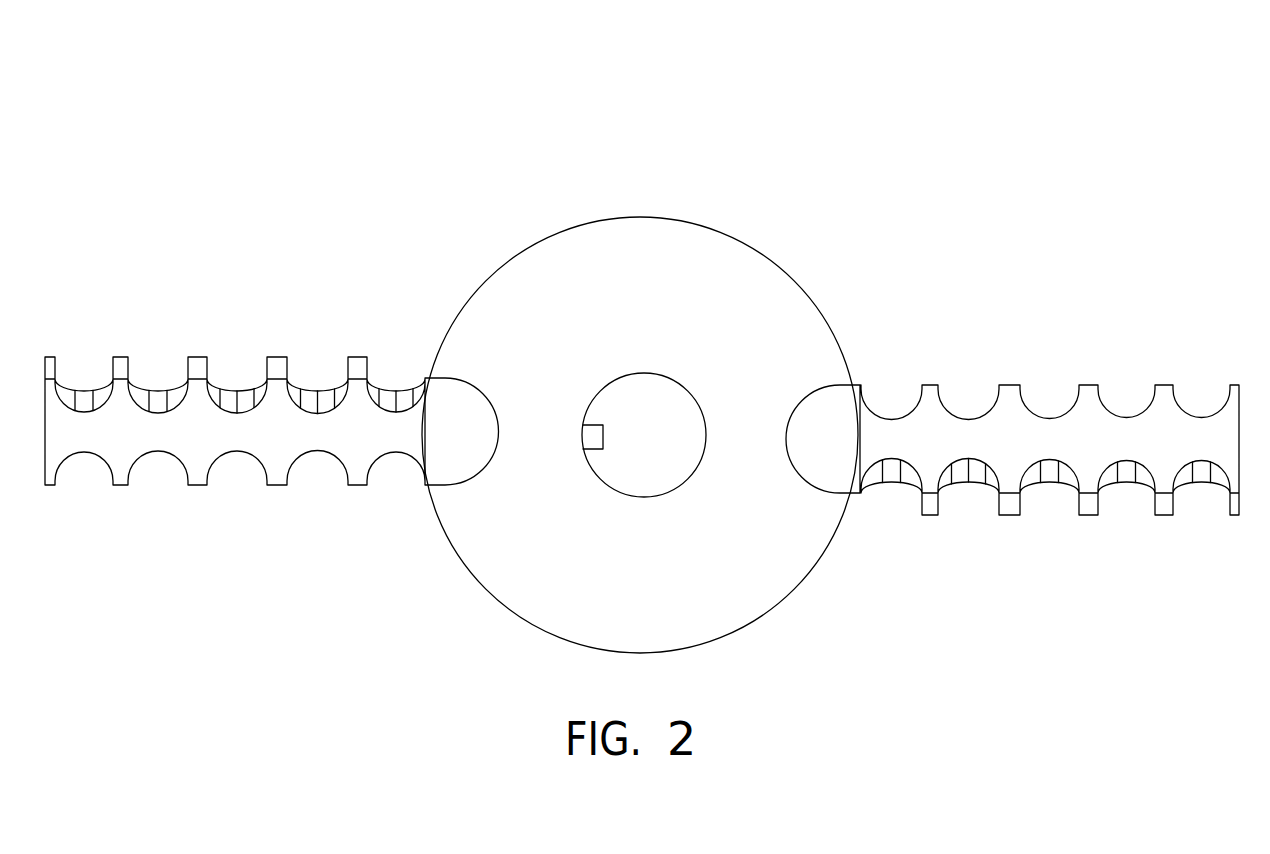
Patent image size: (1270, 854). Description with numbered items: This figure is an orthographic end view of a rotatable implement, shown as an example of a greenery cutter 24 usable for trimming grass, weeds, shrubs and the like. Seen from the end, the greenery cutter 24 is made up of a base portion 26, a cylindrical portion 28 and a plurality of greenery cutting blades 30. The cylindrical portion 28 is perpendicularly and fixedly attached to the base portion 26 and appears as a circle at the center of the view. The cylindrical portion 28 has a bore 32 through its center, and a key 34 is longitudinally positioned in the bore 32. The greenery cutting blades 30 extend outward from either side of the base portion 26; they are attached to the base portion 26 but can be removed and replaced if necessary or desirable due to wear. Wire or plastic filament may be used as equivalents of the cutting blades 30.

The greenery cutter 24 is at (705, 194).
The base portion 26 is at (787, 272).
The cylindrical portion 28 is at (669, 380).
The greenery cutting blades 30 is at (160, 353).
The bore 32 is at (668, 453).
The key 34 is at (597, 437).